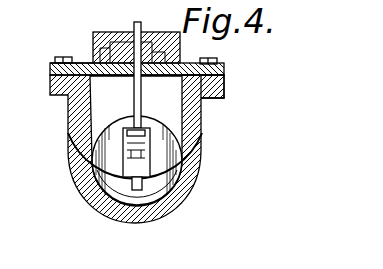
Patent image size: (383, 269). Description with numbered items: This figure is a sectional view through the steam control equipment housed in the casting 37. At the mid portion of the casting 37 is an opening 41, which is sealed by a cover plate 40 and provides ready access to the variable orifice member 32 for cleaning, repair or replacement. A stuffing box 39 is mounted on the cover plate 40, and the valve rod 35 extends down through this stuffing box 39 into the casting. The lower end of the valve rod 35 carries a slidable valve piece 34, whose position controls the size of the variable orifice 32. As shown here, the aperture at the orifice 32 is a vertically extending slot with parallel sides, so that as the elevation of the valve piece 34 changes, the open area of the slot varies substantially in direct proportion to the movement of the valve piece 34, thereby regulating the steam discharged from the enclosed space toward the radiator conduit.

The variable orifice 32 is at (153, 180).
The slidable valve piece 34 is at (122, 173).
The valve rod 35 is at (134, 97).
The casting 37 is at (203, 123).
The stuffing box 39 is at (128, 55).
The cover plate 40 is at (85, 62).
The opening 41 is at (225, 88).